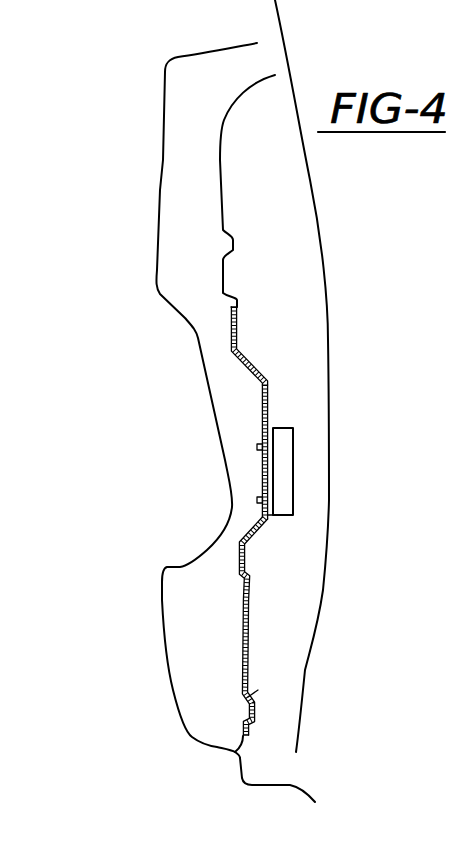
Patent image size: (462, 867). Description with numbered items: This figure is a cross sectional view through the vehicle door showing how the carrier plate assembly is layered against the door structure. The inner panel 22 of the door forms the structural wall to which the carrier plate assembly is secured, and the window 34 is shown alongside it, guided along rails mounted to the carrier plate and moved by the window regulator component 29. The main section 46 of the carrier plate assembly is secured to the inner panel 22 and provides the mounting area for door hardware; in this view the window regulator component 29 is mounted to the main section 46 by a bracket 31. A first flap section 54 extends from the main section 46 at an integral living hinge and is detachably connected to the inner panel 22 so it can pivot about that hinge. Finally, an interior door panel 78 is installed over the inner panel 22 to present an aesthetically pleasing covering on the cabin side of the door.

The interior door panel 78 is at (158, 252).
The window 34 is at (315, 208).
The main section 46 is at (258, 372).
The bracket 31 is at (268, 395).
The window regulator component 29 is at (286, 471).
The first flap section 54 is at (247, 622).
The inner panel 22 is at (290, 785).